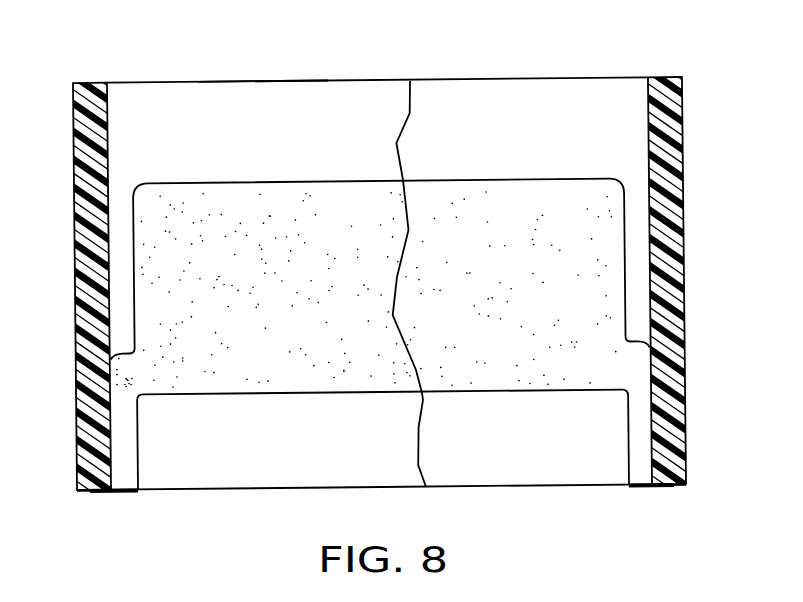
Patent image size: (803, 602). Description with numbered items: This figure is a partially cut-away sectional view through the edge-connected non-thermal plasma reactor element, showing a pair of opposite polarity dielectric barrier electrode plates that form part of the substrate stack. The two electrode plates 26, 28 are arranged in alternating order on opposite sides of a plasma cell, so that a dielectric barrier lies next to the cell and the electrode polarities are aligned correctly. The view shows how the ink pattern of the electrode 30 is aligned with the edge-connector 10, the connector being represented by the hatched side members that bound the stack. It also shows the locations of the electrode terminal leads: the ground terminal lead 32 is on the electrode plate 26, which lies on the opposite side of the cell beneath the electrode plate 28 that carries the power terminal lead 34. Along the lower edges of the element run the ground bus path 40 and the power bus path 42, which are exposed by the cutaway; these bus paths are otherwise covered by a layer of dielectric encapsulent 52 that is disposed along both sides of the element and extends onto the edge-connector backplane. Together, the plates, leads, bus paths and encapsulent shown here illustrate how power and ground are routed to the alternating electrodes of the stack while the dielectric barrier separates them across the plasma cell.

The edge-connector 10 is at (75, 125).
The electrode plate 26 is at (520, 79).
The electrode plate 28 is at (265, 80).
The electrode 30 is at (160, 333).
The ground terminal lead 32 is at (643, 444).
The power terminal lead 34 is at (123, 478).
The ground bus path 40 is at (640, 488).
The power bus path 42 is at (120, 493).
The dielectric encapsulent 52 is at (92, 493).